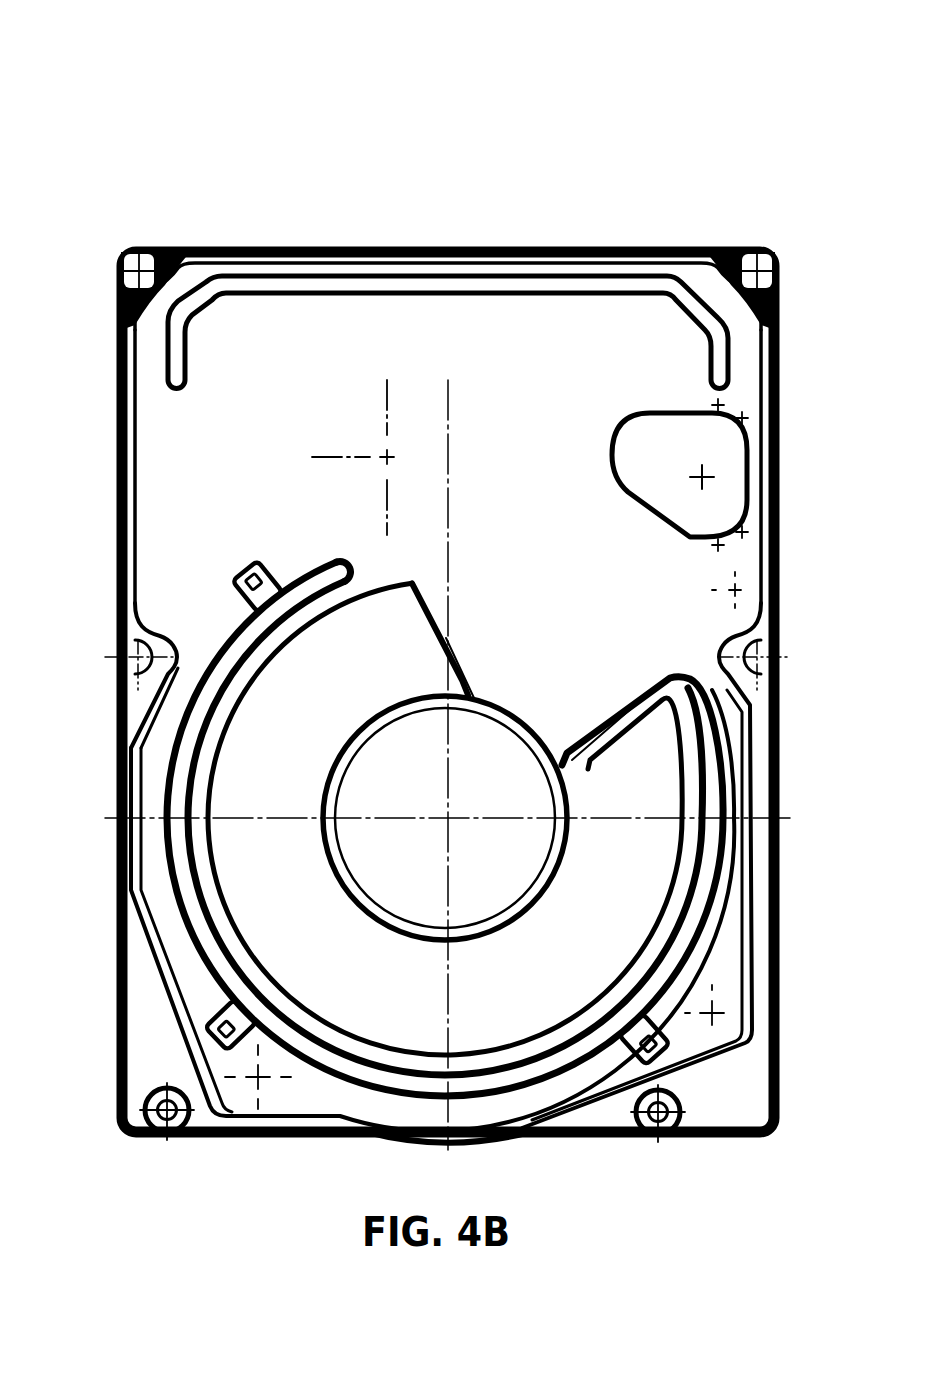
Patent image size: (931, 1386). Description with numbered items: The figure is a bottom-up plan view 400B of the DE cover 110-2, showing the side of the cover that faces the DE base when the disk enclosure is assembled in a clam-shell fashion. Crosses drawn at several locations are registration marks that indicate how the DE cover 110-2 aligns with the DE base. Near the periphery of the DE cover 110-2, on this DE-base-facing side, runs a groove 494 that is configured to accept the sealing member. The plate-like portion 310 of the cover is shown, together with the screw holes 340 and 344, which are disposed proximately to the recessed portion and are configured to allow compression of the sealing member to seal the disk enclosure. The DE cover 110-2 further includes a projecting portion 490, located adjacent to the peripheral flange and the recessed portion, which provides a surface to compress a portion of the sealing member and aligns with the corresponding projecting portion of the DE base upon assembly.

The bottom-up plan view 400B is at (157, 84).
The DE cover 110-2 is at (231, 214).
The groove 494 is at (445, 274).
The plate-like portion 310 is at (215, 500).
The screw hole 344 is at (167, 1140).
The screw hole 340 is at (658, 1140).
The projecting portion 490 is at (477, 1142).